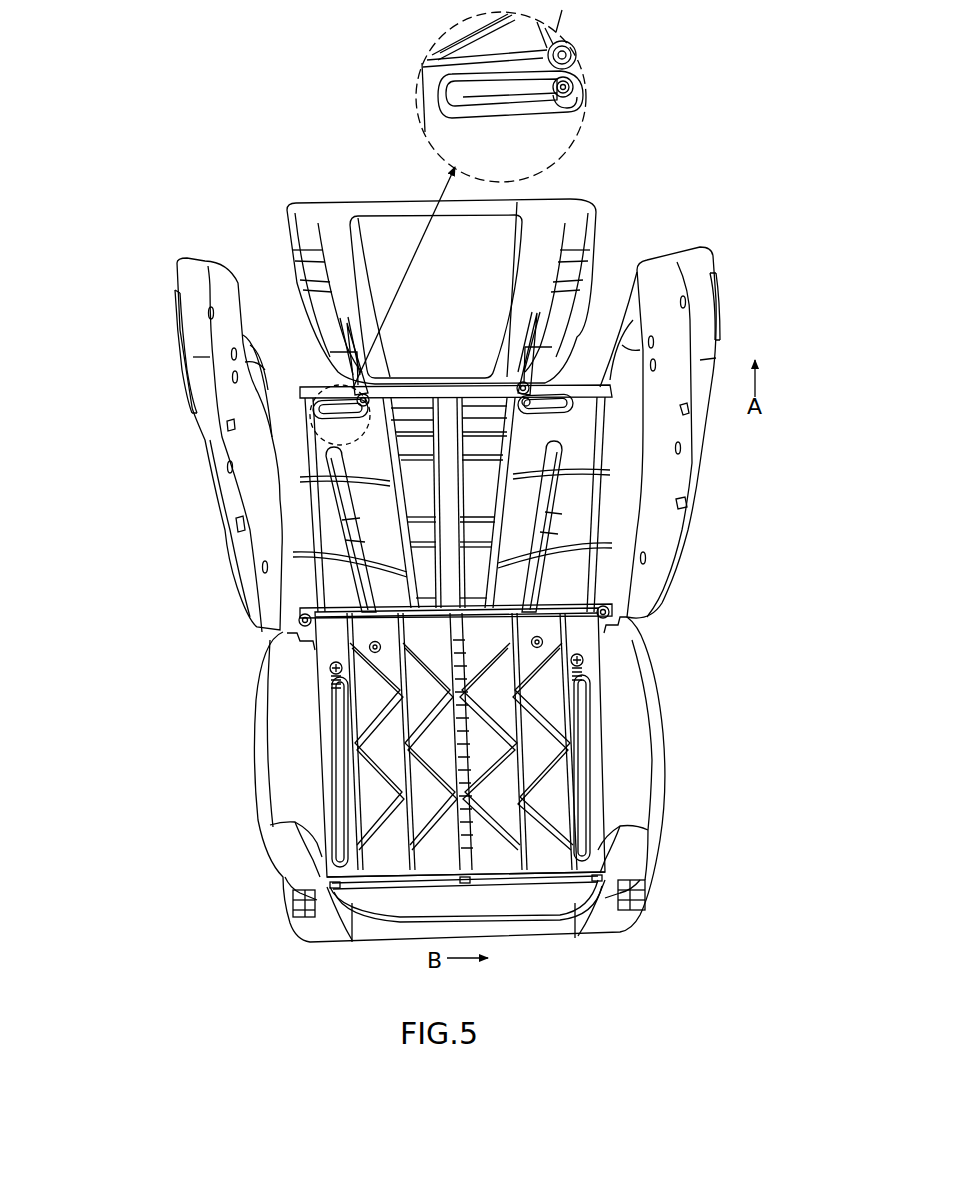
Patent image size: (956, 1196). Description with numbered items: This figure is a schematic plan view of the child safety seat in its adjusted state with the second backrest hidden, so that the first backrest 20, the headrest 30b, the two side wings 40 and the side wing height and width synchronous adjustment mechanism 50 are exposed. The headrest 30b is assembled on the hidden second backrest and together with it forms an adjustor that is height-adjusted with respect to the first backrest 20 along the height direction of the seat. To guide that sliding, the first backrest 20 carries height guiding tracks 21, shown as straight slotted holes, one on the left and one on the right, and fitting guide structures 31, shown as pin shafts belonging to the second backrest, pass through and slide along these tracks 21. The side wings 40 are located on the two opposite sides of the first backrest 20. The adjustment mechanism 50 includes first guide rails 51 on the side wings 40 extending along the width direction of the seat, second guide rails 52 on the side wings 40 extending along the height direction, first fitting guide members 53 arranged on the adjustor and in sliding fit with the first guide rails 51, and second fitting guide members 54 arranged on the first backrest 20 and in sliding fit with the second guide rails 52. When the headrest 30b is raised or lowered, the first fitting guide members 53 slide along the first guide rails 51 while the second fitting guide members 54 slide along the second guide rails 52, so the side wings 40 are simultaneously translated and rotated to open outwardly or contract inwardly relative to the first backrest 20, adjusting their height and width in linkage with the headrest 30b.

The first backrest 20 is at (338, 650).
The height guiding track 21 is at (336, 735).
The headrest 30b is at (375, 228).
The fitting guide structure 31 is at (331, 670).
The side wing 40 is at (224, 271).
The side wing height and width synchronous adjustment mechanism 50 is at (423, 357).
The first guide rail 51 is at (314, 414).
The second guide rail 52 is at (336, 502).
The first fitting guide member 53 is at (357, 396).
The second fitting guide member 54 is at (371, 645).